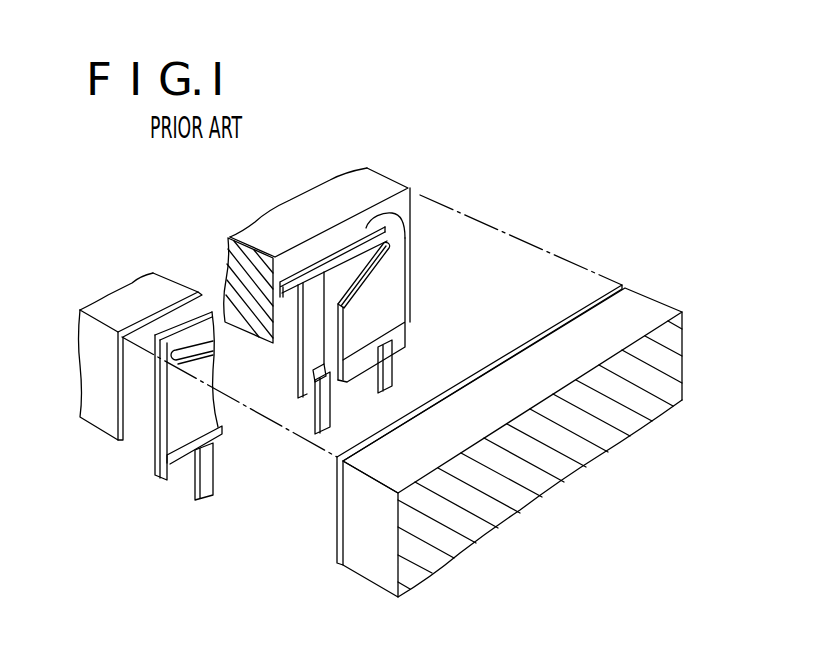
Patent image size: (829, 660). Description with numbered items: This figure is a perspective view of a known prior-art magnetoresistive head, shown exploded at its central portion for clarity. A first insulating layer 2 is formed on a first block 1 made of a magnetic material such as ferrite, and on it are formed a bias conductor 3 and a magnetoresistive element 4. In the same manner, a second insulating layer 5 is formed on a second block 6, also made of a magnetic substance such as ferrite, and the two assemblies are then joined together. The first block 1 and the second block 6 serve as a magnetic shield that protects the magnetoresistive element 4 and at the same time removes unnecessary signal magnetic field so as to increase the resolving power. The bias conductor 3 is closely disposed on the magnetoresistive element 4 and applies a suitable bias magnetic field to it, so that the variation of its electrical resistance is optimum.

The first block 1 is at (372, 175).
The first insulating layer 2 is at (408, 201).
The bias conductor 3 is at (406, 221).
The magnetoresistive element 4 is at (388, 297).
The second insulating layer 5 is at (607, 288).
The second block 6 is at (648, 315).